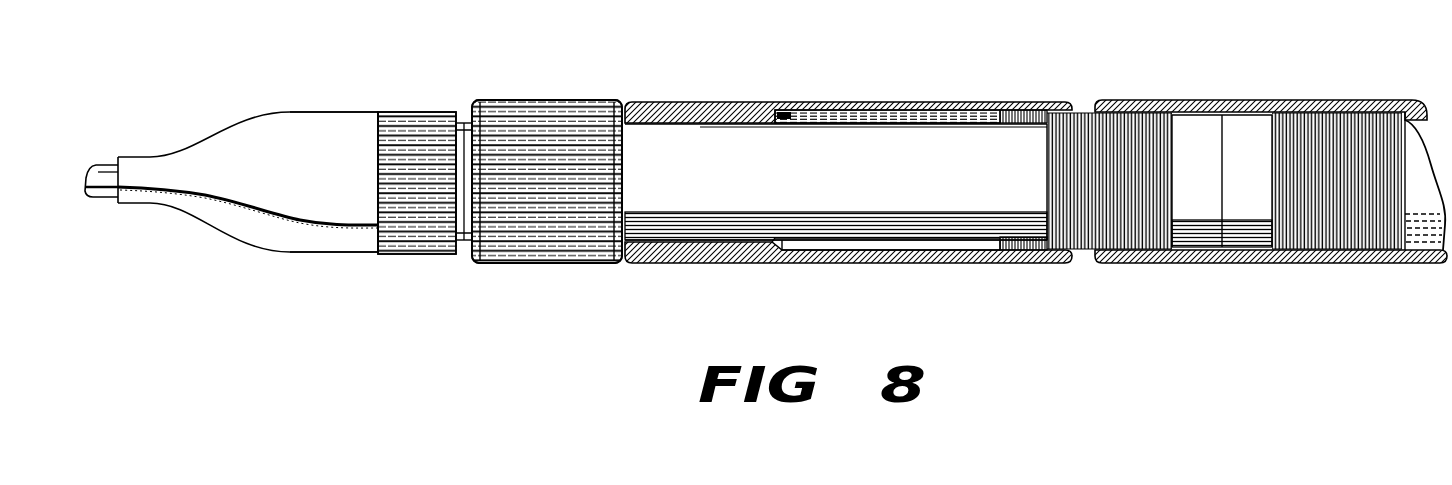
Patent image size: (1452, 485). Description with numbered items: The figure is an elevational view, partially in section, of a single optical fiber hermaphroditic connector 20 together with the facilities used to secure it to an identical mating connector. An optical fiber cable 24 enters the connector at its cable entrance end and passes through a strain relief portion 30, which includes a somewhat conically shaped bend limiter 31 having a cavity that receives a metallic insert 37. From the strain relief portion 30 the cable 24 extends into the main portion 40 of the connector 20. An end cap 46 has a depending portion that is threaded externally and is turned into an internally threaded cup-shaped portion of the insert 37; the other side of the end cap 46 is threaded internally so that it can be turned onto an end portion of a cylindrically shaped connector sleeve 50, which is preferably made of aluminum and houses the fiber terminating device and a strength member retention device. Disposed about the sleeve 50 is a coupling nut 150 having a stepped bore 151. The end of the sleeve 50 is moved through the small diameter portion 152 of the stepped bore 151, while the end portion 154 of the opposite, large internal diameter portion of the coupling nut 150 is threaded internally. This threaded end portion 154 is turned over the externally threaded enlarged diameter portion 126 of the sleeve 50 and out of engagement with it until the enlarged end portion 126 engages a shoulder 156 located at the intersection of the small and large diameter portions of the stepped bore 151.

The single optical fiber hermaphroditic connector 20 is at (1258, 68).
The optical fiber cable 24 is at (101, 173).
The strain relief portion 30 is at (314, 112).
The bend limiter 31 is at (340, 115).
The metallic insert 37 is at (410, 115).
The main portion 40 is at (695, 125).
The end cap 46 is at (542, 103).
The connector sleeve 50 is at (746, 125).
The enlarged diameter portion of the sleeve 126 is at (1198, 120).
The coupling nut 150 is at (882, 103).
The stepped bore 151 is at (840, 110).
The small diameter portion 152 is at (656, 101).
The end portion of the coupling nut 154 is at (1025, 103).
The shoulder 156 is at (790, 255).